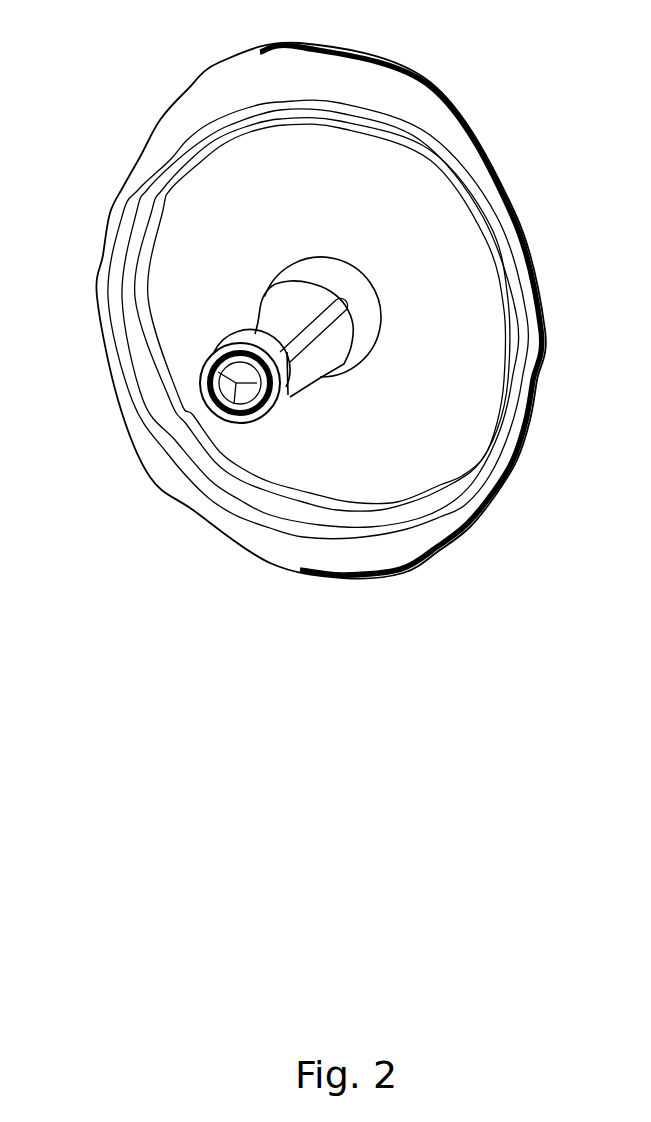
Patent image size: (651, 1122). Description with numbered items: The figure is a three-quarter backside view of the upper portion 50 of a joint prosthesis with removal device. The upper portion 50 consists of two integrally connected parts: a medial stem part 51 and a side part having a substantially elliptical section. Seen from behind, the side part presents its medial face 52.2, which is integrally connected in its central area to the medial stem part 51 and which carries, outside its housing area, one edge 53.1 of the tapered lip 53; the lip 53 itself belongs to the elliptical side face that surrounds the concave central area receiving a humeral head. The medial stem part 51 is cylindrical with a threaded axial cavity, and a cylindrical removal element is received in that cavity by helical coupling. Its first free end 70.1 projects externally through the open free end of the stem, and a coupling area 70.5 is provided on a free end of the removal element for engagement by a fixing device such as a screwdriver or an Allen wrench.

The upper portion 50 is at (222, 617).
The medial stem part 51 is at (270, 322).
The medial face 52.2 is at (322, 314).
The tapered lip 53 is at (433, 87).
The edge of lip 53.1 is at (495, 225).
The first free end 70.1 is at (284, 394).
The coupling area 70.5 is at (212, 400).